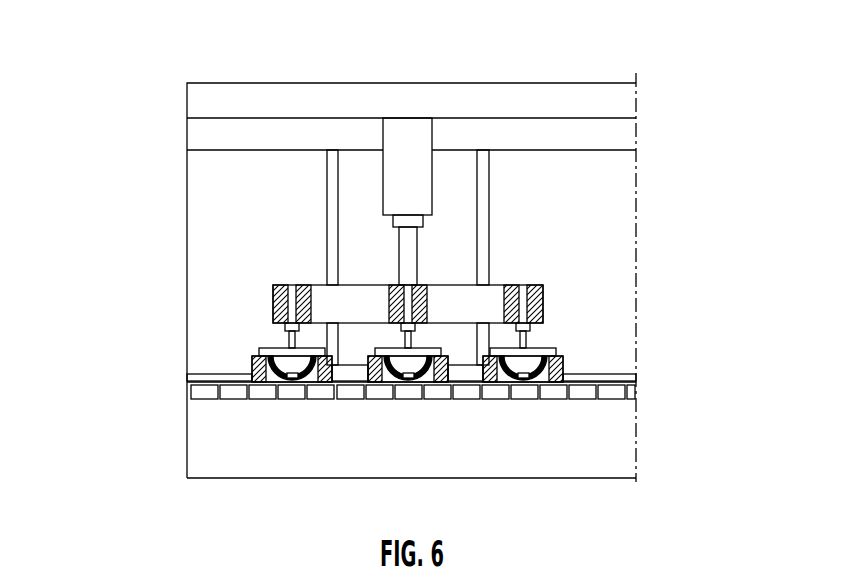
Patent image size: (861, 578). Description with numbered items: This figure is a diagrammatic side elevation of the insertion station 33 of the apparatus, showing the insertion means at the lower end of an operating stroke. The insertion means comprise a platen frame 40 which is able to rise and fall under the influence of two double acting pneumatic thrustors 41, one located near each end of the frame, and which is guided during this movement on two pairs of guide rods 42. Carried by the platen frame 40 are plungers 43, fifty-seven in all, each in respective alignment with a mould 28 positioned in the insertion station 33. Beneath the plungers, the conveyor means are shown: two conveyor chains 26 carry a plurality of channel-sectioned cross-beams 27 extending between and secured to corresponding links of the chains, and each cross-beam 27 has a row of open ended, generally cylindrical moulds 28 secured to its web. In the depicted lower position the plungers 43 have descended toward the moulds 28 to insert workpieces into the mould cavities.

The insertion station 33 is at (443, 67).
The double acting pneumatic thrustor 41 is at (398, 148).
The guide rod 42 is at (327, 218).
The platen frame 40 is at (546, 297).
The plunger 43 is at (556, 340).
The mould 28 is at (388, 378).
The cross-beam 27 is at (570, 369).
The conveyor chain 26 is at (200, 394).